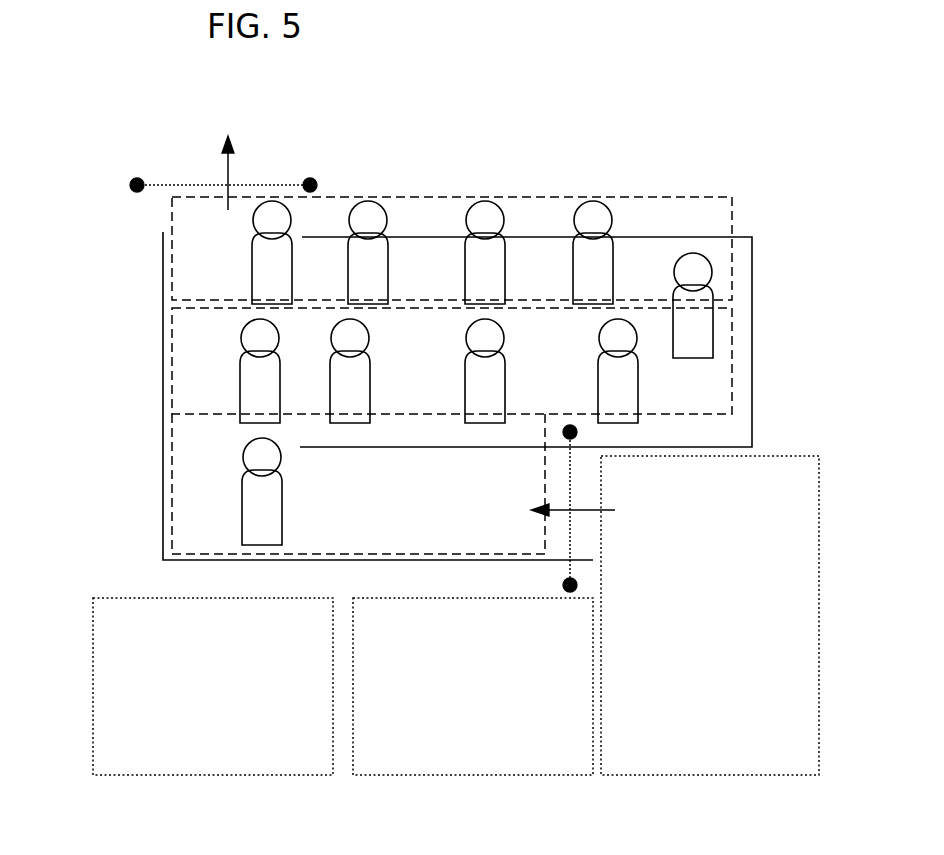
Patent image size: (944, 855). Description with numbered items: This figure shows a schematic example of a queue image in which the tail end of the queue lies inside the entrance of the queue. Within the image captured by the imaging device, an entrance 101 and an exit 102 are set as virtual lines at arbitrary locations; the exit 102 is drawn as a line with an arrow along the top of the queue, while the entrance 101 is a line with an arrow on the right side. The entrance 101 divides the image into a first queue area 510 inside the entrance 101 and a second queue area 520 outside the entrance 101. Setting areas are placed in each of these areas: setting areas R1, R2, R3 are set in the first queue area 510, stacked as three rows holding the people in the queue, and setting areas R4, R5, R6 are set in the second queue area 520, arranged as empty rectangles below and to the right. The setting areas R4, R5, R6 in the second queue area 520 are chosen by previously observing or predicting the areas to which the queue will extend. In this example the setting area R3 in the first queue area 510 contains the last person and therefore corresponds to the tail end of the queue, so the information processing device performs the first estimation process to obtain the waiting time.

The exit 102 is at (262, 183).
The entrance 101 is at (570, 468).
The first queue area 510 is at (92, 198).
The second queue area 520 is at (830, 456).
The setting area R1 is at (172, 222).
The setting area R2 is at (172, 362).
The setting area R3 is at (172, 516).
The setting area R4 is at (788, 456).
The setting area R5 is at (460, 775).
The setting area R6 is at (193, 775).